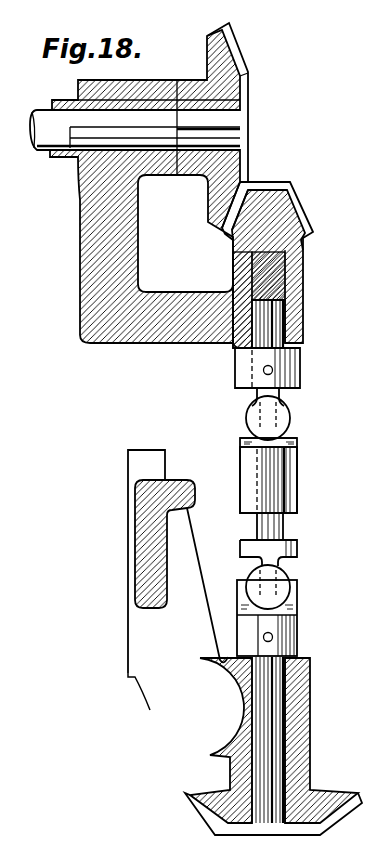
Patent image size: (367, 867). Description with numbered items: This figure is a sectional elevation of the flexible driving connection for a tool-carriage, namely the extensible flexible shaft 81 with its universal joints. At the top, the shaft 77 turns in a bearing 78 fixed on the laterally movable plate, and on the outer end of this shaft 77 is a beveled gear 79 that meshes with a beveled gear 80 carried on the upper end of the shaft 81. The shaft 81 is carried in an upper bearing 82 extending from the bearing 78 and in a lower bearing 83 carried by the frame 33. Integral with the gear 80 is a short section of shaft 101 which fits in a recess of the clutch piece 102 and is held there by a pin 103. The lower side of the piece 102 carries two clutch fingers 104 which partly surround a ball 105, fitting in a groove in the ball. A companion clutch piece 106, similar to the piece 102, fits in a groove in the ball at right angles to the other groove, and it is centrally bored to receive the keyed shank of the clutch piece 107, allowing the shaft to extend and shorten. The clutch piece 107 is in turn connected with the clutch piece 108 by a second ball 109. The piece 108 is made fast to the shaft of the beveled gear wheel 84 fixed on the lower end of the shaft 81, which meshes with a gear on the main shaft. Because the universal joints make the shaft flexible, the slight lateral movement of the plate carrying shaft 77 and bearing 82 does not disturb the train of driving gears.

The frame 33 is at (145, 550).
The shaft 77 is at (56, 153).
The bearing 78 is at (155, 177).
The beveled gear 79 is at (241, 64).
The beveled gear 80 is at (308, 172).
The extensible flexible shaft 81 is at (251, 475).
The upper bearing 82 is at (238, 270).
The lower bearing 83 is at (192, 749).
The beveled gear wheel 84 is at (190, 812).
The short section of shaft 101 is at (286, 344).
The clutch piece 102 is at (235, 383).
The pin 103 is at (273, 370).
The clutch fingers 104 is at (262, 414).
The ball 105 is at (291, 411).
The companion clutch piece 106 is at (299, 484).
The clutch piece 107 is at (286, 528).
The clutch piece 108 is at (300, 636).
The ball 109 is at (290, 575).